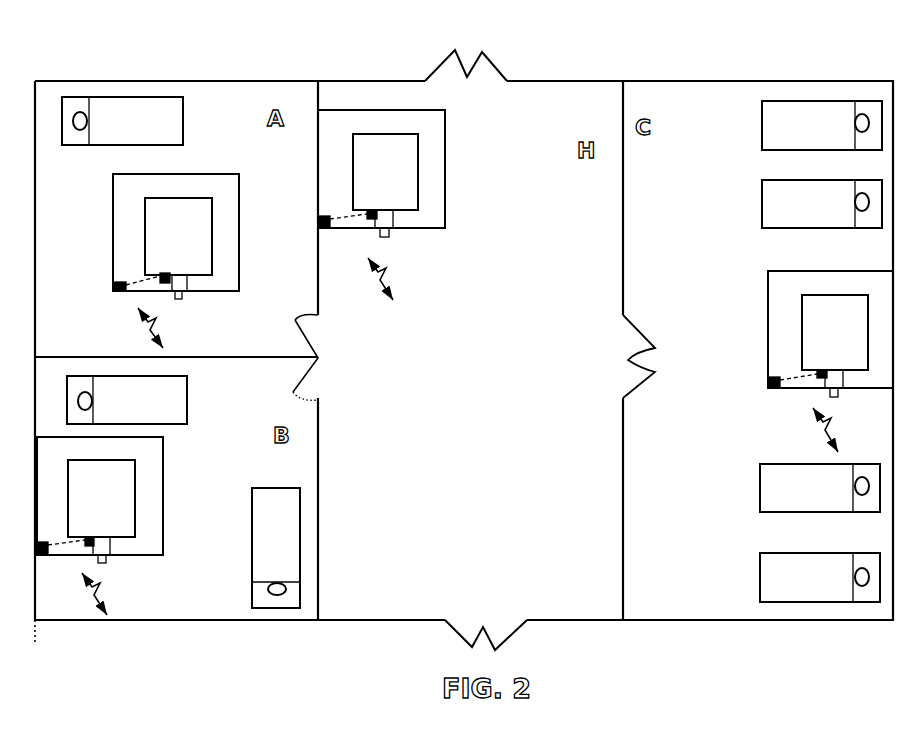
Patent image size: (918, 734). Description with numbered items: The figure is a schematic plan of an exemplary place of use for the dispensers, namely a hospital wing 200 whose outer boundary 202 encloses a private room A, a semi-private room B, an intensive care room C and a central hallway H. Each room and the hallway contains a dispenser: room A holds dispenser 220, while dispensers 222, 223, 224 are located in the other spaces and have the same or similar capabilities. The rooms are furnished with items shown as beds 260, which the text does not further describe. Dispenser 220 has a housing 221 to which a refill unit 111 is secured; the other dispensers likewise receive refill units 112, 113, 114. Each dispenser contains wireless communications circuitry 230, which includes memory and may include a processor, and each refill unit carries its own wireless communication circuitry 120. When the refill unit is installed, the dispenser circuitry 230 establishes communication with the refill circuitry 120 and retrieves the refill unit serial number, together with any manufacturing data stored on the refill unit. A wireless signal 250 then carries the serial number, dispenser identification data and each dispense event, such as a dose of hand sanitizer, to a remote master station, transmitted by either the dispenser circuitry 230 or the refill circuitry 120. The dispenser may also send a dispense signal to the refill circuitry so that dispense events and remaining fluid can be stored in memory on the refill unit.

The hospital wing 200 is at (112, 33).
The facility wall / building outline 202 is at (293, 80).
The refill unit 111 is at (128, 228).
The refill unit 112 is at (145, 482).
The refill unit 113 is at (430, 155).
The refill unit 114 is at (790, 333).
The wireless communication circuitry 120 is at (170, 283).
The dispenser 220 is at (248, 250).
The housing 221 is at (240, 208).
The dispenser 222 is at (173, 515).
The dispenser 223 is at (457, 188).
The dispenser 224 is at (755, 296).
The wireless communications circuitry 230 is at (119, 291).
The wireless signal 250 is at (162, 328).
The bed 260 is at (183, 125).